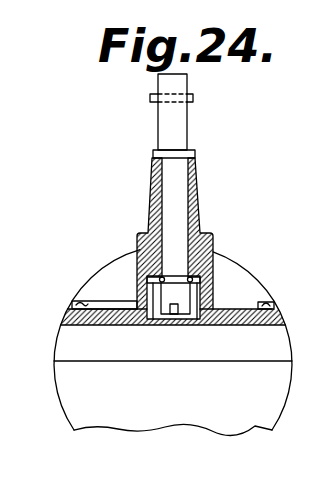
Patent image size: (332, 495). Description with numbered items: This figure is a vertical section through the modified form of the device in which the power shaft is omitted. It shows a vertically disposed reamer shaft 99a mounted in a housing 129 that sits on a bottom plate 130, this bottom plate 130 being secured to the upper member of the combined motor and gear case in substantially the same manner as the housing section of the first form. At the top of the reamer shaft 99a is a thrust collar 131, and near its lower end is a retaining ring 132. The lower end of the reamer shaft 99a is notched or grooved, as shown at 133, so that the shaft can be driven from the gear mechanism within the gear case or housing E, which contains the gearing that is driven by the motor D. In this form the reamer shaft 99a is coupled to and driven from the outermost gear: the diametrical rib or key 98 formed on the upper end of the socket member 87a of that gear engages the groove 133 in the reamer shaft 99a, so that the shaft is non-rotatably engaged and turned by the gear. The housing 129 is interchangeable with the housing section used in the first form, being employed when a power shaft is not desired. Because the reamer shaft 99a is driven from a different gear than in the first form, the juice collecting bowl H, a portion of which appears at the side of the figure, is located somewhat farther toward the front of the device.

The gear case or housing E is at (63, 360).
The motor D is at (240, 265).
The housing 129 is at (203, 245).
The reamer shaft 99a is at (180, 130).
The thrust collar 131 is at (186, 154).
The retaining ring 132 is at (161, 283).
The notch or groove 133 is at (172, 306).
The bottom plate 130 is at (241, 310).
The rib or key 98 is at (182, 323).
The socket member 87a is at (157, 321).
The juice collecting bowl H is at (325, 85).